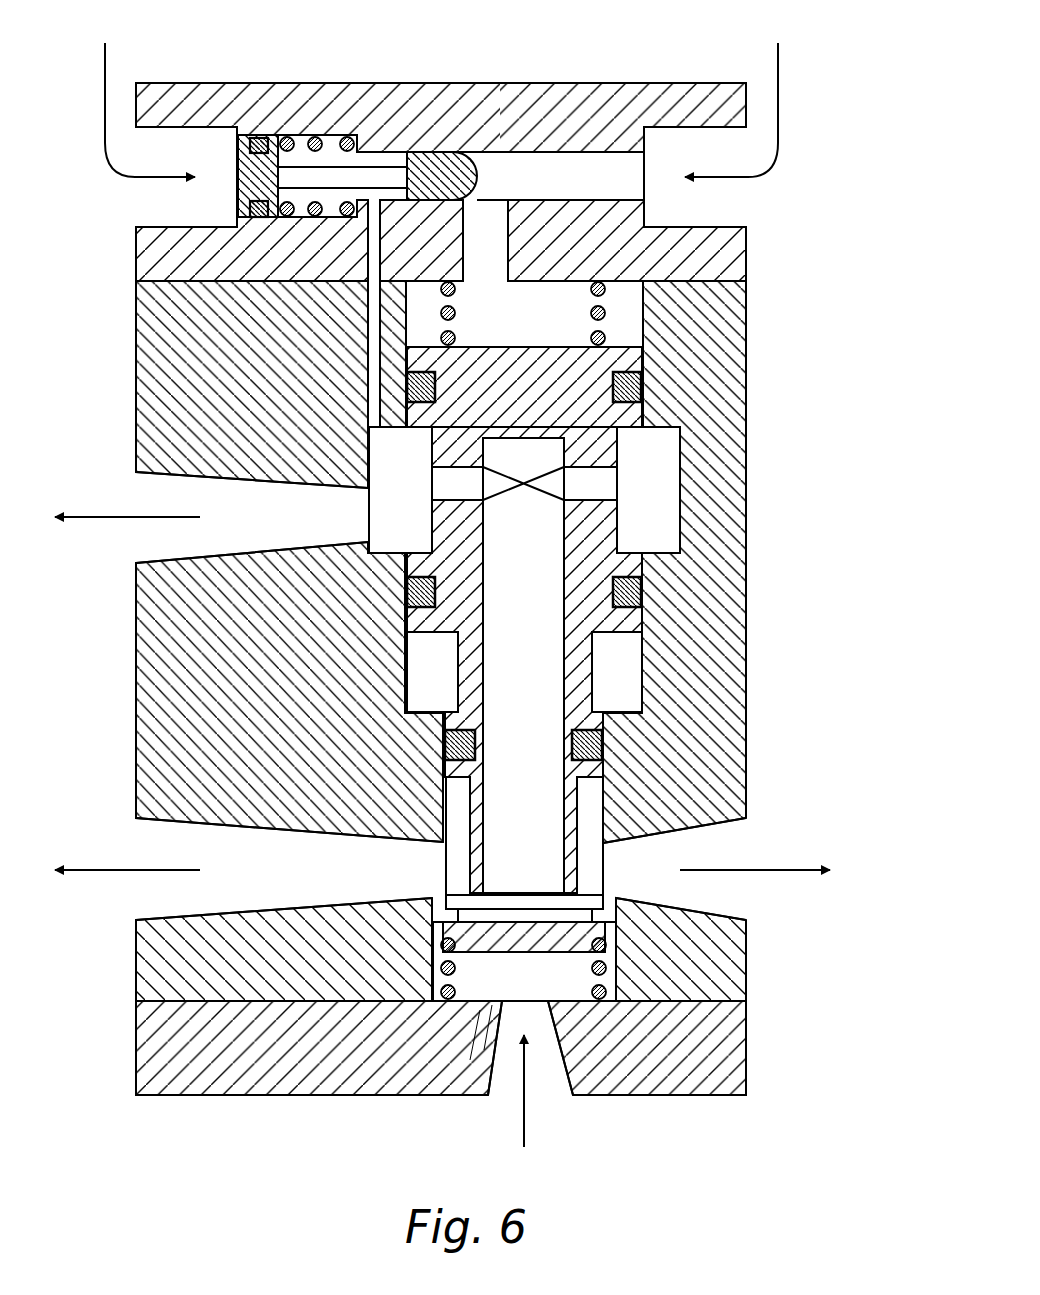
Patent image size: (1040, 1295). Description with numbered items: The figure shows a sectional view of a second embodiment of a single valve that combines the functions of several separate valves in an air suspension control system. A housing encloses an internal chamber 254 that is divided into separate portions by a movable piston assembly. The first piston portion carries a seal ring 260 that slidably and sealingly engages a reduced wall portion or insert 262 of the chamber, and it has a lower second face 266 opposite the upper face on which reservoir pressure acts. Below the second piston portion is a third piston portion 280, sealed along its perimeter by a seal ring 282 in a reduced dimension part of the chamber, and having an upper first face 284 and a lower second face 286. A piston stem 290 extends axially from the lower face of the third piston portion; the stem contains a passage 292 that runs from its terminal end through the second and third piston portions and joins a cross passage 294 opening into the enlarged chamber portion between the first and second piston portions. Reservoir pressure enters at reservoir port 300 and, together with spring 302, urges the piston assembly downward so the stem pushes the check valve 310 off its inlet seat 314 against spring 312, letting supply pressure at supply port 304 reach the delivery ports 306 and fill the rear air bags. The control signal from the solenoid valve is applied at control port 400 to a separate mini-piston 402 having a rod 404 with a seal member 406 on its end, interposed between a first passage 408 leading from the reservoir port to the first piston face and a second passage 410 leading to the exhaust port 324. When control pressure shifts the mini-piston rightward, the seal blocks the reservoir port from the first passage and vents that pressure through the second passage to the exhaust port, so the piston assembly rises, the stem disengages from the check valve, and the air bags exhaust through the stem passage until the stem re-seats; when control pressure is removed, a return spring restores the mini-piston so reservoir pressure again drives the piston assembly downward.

The internal chamber 254 is at (660, 535).
The seal ring 260 is at (640, 380).
The insert 262 is at (628, 328).
The second face of first piston portion 266 is at (633, 432).
The third piston portion 280 is at (600, 770).
The seal ring 282 is at (603, 748).
The first face of third piston portion 284 is at (600, 700).
The second face of third piston portion 286 is at (447, 860).
The piston stem 290 is at (573, 825).
The passage 292 is at (563, 695).
The cross passage 294 is at (580, 483).
The reservoir port 300 is at (727, 225).
The spring 302 is at (605, 307).
The supply port 304 is at (575, 1075).
The delivery ports 306 is at (170, 910).
The check valve 310 is at (493, 950).
The spring 312 is at (605, 968).
The inlet seat 314 is at (432, 920).
The exhaust port 324 is at (180, 560).
The control port 400 is at (157, 227).
The mini-piston 402 is at (268, 167).
The rod 404 is at (330, 173).
The seal member 406 is at (448, 170).
The first passage 408 is at (467, 242).
The second passage 410 is at (375, 338).